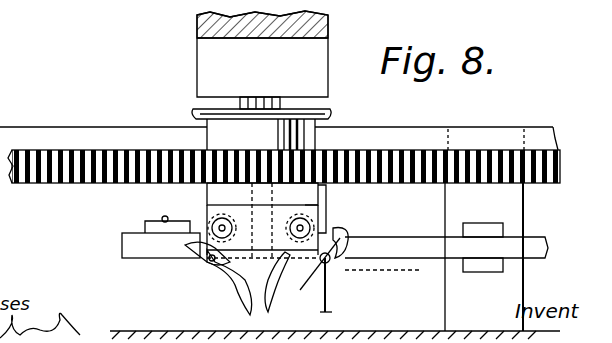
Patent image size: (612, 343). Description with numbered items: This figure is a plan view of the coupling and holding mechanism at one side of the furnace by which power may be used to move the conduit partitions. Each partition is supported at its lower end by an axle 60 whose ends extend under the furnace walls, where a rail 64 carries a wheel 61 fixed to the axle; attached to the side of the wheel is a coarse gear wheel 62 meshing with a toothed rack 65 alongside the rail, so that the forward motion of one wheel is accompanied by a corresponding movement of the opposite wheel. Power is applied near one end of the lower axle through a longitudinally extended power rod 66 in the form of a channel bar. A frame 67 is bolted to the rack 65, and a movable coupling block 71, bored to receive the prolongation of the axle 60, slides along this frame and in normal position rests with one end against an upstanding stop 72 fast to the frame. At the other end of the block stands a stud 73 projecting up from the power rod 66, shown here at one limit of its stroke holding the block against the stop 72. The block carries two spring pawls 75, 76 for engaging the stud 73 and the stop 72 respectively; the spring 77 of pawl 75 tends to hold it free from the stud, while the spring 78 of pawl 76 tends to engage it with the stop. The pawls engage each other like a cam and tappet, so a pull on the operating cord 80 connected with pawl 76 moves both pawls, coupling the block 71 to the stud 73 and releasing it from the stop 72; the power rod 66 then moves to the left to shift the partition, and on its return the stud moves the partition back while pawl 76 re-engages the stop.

The axle 60 is at (248, 103).
The wheel 61 is at (214, 131).
The coarse gear wheel 62 is at (328, 150).
The rail 64 is at (57, 132).
The toothed rack 65 is at (548, 168).
The power rod 66 is at (402, 242).
The frame 67 is at (330, 212).
The coupling block 71 is at (207, 198).
The stop 72 is at (333, 232).
The stud 73 is at (212, 222).
The spring pawl 75 is at (225, 272).
The spring pawl 76 is at (285, 272).
The spring 77 is at (200, 262).
The spring 78 is at (340, 262).
The operating cord 80 is at (326, 311).